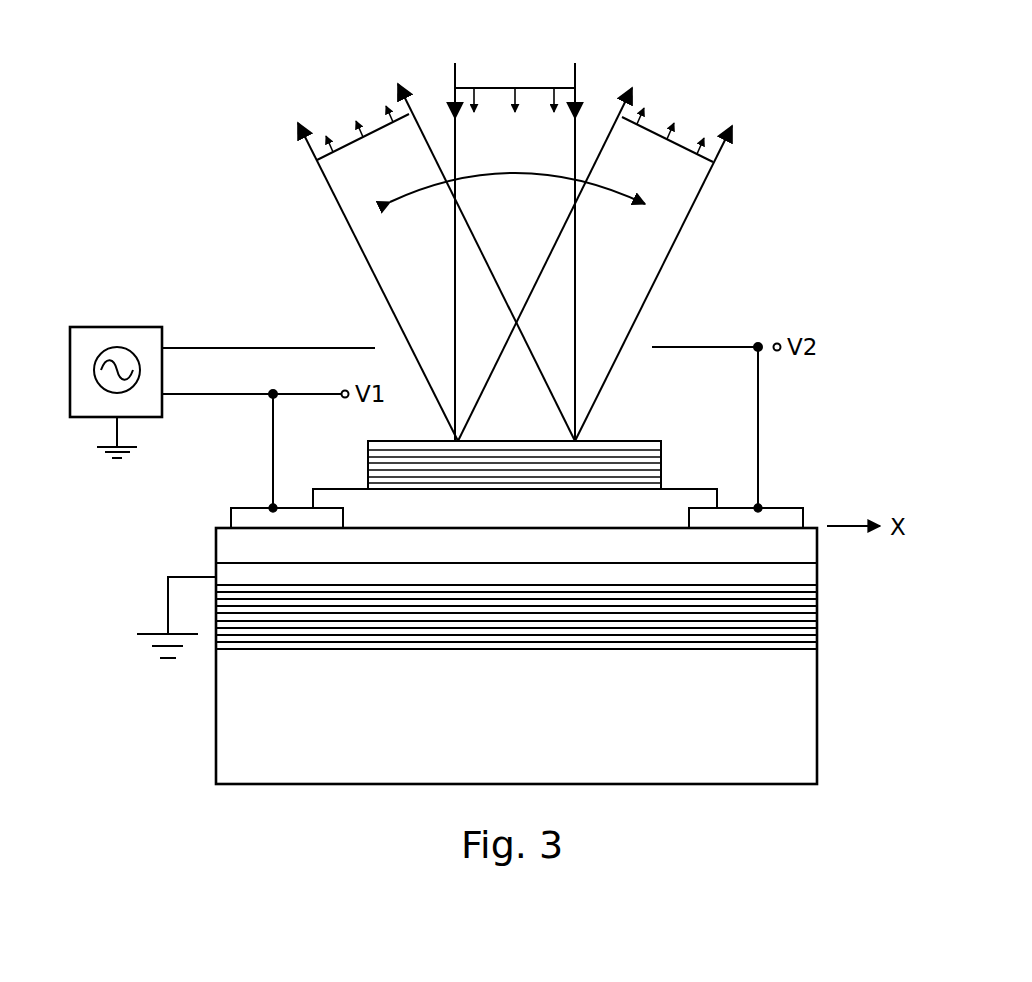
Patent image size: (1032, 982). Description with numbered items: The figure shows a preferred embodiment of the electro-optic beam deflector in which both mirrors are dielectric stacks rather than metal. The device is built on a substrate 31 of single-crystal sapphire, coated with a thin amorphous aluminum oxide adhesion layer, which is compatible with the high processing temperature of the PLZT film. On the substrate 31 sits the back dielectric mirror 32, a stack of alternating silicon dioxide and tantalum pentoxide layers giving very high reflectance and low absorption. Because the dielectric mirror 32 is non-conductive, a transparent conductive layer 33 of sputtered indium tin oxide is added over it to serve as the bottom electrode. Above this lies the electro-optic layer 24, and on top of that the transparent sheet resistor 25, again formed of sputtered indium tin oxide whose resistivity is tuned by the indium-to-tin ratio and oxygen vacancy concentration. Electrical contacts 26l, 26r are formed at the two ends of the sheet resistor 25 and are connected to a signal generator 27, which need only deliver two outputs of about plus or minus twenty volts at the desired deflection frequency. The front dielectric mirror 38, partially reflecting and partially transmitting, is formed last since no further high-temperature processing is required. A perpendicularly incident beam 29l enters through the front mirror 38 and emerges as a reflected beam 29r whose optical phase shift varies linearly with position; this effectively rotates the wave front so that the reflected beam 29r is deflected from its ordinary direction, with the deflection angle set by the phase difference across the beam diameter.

The electro-optic layer 24 is at (810, 545).
The transparent sheet resistor 25 is at (692, 492).
The electrical contact 26l is at (256, 520).
The electrical contact 26r is at (784, 510).
The signal generator 27 is at (160, 336).
The incident beam 29l is at (343, 221).
The phase-shifted reflected beam 29r is at (692, 210).
The substrate 31 is at (595, 731).
The back dielectric mirror 32 is at (825, 645).
The transparent conductive layer 33 is at (810, 570).
The front dielectric mirror 38 is at (666, 489).